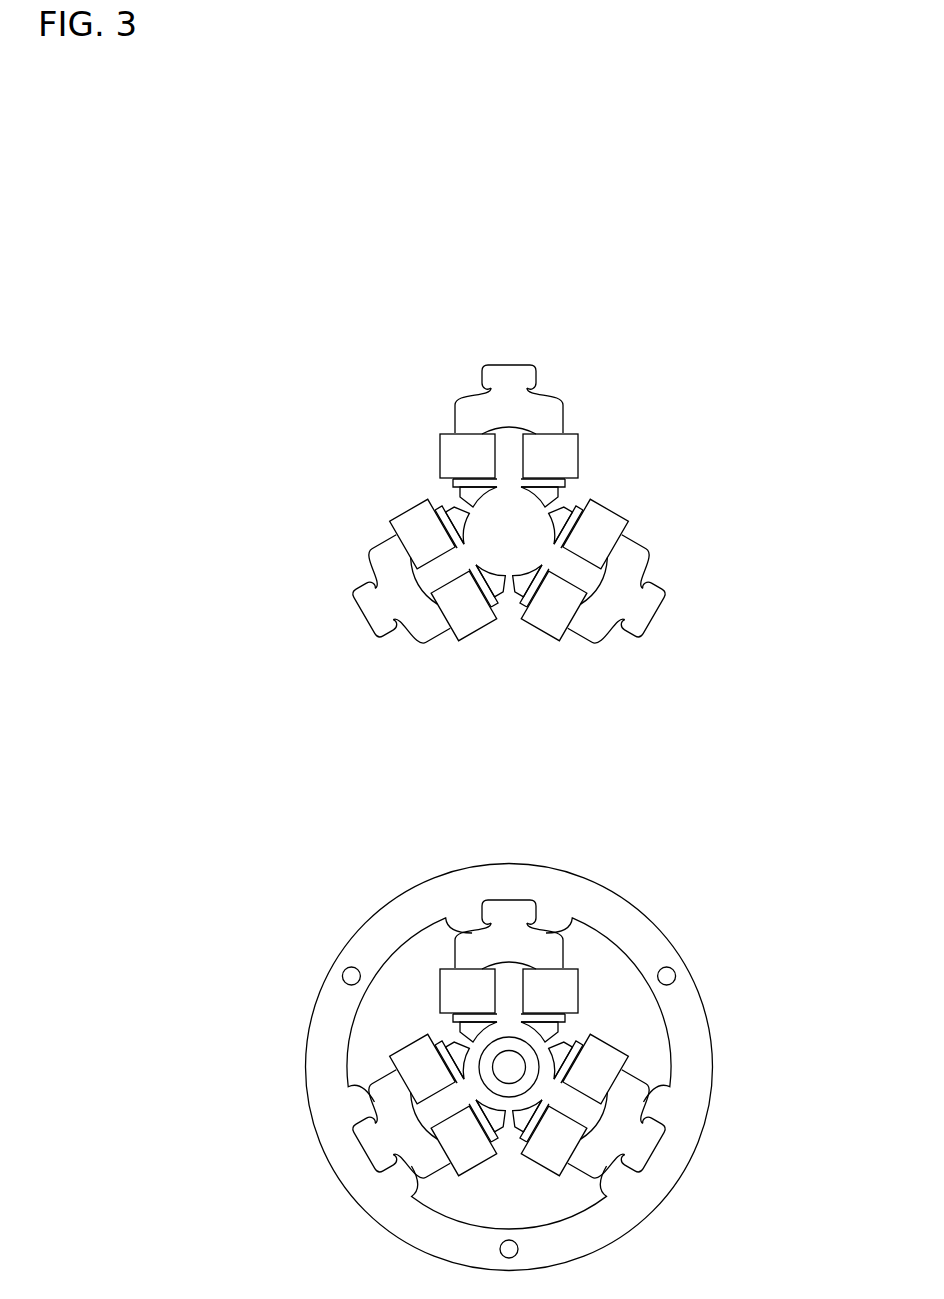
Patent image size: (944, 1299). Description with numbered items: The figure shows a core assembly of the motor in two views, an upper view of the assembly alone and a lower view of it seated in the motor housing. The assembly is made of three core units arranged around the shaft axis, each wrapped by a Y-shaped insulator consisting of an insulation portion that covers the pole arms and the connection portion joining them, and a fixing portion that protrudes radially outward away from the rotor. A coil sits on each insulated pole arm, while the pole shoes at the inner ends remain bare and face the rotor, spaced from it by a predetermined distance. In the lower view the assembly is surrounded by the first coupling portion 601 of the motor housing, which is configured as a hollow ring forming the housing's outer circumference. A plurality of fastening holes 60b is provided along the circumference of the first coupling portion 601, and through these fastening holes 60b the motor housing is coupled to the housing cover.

The fastening hole 60b is at (585, 1110).
The first coupling portion 601 is at (563, 1073).